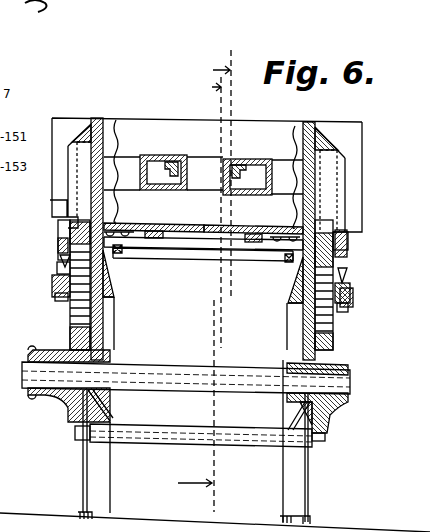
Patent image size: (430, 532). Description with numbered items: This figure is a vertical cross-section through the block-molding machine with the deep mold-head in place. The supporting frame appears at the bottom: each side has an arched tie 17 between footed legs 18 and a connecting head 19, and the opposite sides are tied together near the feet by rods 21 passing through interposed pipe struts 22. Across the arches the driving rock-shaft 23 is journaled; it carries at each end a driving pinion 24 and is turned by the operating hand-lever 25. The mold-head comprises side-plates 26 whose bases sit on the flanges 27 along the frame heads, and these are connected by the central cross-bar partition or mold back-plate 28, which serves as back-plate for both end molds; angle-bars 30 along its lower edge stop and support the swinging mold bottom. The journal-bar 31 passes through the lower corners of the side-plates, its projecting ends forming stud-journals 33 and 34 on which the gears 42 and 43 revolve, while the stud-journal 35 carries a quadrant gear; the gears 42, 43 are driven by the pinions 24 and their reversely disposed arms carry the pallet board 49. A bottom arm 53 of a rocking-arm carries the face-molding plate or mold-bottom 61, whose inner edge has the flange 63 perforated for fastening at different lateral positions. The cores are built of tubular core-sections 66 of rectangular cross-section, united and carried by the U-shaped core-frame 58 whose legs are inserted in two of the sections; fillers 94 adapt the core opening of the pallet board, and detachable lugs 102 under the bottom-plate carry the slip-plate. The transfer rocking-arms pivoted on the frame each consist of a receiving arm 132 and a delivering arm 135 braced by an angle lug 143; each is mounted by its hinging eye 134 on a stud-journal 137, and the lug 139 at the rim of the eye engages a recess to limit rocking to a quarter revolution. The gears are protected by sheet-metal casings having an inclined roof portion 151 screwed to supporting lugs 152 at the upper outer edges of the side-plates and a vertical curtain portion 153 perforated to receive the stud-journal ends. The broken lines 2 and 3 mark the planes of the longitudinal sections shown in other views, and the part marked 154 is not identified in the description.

The broken line 2 is at (232, 97).
The broken line 3 is at (204, 406).
The arched tie 17 is at (100, 405).
The footed legs 18 is at (100, 481).
The connecting head 19 is at (101, 278).
The rods 21 is at (76, 436).
The pipe struts 22 is at (172, 446).
The driving rock-shaft 23 is at (185, 379).
The driving pinions 24 is at (63, 396).
The operating hand-lever 25 is at (32, 396).
The side-plates 26 is at (100, 118).
The flanges 27 is at (300, 268).
The central cross-bar partition 28 is at (114, 122).
The angle-bars 30 is at (230, 314).
The journal-bar 31 is at (188, 258).
The stud-journal 33 is at (63, 244).
The stud-journal 34 is at (348, 265).
The stud-journal 35 is at (7, 237).
The gear 42 is at (83, 233).
The gear 43 is at (340, 237).
The pallet board 49 is at (176, 128).
The bottom arm 53 is at (258, 249).
The U-shaped core-frame 58 is at (240, 173).
The face-molding plate 61 is at (180, 230).
The flange 63 is at (236, 234).
The core-sections 66 is at (206, 175).
The fillers 94 is at (128, 165).
The detachable lugs 102 is at (125, 233).
The receiving arm 132 is at (352, 281).
The hinging eye 134 is at (58, 301).
The delivering arm 135 is at (358, 232).
The stud-journal 137 is at (53, 281).
The lug 139 is at (55, 270).
The angle lugs 143 is at (62, 265).
The roof portion 151 is at (88, 130).
The supporting lugs 152 is at (90, 135).
The curtain portion 153 is at (67, 203).
The spacer 154 is at (347, 253).